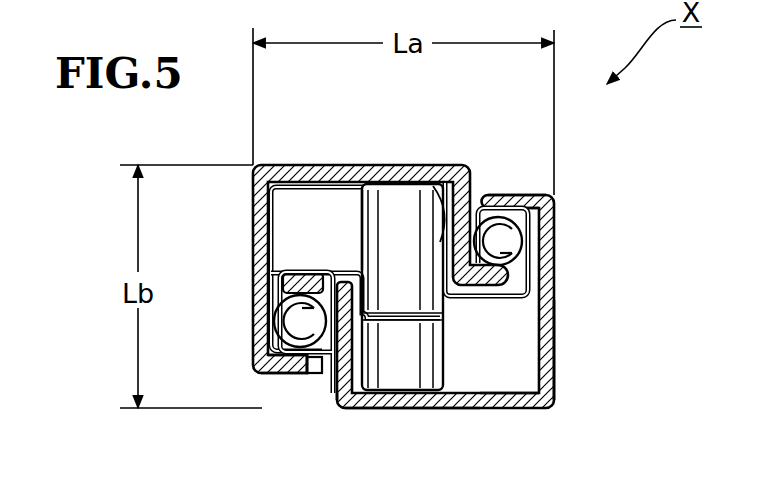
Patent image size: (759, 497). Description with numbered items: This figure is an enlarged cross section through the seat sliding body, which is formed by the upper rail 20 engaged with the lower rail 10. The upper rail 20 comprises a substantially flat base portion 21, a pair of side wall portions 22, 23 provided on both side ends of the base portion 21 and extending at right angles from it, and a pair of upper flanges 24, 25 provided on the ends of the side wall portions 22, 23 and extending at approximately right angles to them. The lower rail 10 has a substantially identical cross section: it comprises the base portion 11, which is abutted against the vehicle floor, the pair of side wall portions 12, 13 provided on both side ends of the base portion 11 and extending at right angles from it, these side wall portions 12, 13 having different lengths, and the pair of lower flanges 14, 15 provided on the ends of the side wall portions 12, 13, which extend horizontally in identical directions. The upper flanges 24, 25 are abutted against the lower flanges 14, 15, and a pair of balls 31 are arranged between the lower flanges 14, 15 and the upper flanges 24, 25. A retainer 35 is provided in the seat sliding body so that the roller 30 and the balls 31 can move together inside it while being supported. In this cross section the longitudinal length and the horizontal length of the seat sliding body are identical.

The lower rail 10 is at (403, 412).
The base portion 11 is at (506, 409).
The side wall portion 12 is at (554, 356).
The side wall portion 13 is at (330, 390).
The lower flange 14 is at (517, 192).
The lower flange 15 is at (308, 290).
The upper rail 20 is at (404, 158).
The base portion 21 is at (381, 183).
The side wall portion 22 is at (446, 190).
The side wall portion 23 is at (253, 248).
The upper flange 24 is at (488, 296).
The upper flange 25 is at (272, 382).
The roller 30 is at (362, 213).
The ball 31 is at (510, 232).
The retainer 35 is at (408, 330).